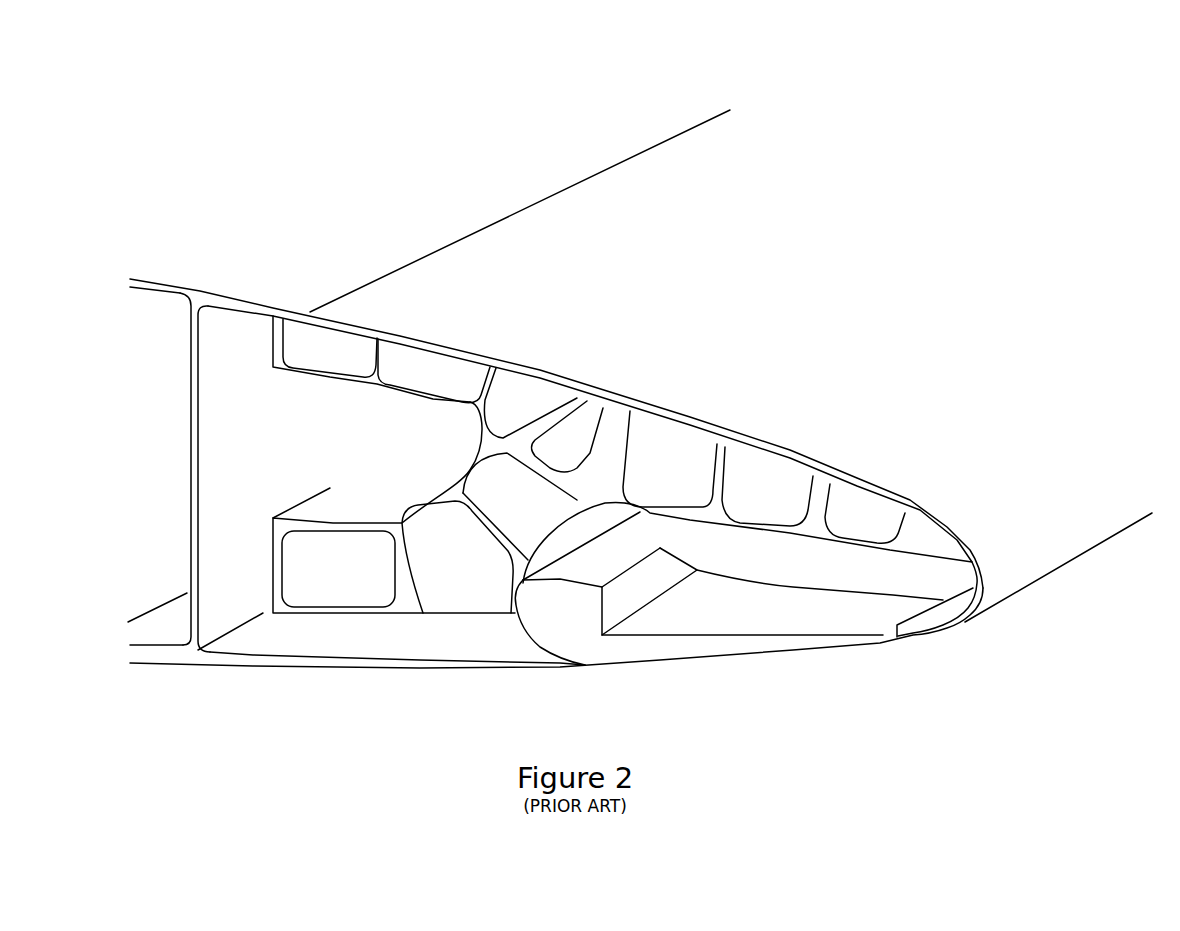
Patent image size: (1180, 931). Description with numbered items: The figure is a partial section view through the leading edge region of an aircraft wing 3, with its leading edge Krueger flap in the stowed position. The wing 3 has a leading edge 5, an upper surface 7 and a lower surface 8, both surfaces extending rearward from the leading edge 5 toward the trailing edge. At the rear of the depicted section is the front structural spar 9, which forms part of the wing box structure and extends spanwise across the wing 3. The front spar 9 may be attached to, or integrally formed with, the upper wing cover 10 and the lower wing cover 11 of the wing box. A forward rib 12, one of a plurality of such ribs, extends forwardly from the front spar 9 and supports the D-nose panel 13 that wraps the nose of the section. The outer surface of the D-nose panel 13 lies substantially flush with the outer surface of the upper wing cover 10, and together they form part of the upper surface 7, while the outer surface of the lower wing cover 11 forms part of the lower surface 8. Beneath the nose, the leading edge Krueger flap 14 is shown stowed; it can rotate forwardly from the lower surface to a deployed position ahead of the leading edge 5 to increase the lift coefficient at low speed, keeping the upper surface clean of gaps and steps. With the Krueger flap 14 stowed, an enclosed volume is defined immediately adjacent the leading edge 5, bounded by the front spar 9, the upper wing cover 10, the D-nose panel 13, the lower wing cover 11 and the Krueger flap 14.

The aircraft wing 3 is at (376, 190).
The leading edge 5 is at (1009, 584).
The upper surface 7 is at (531, 256).
The lower surface 8 is at (262, 670).
The front structural spar 9 is at (195, 422).
The upper wing cover 10 is at (197, 288).
The lower wing cover 11 is at (157, 658).
The forward rib 12 is at (405, 587).
The D-nose panel 13 is at (660, 360).
The leading edge Krueger flap 14 is at (593, 643).